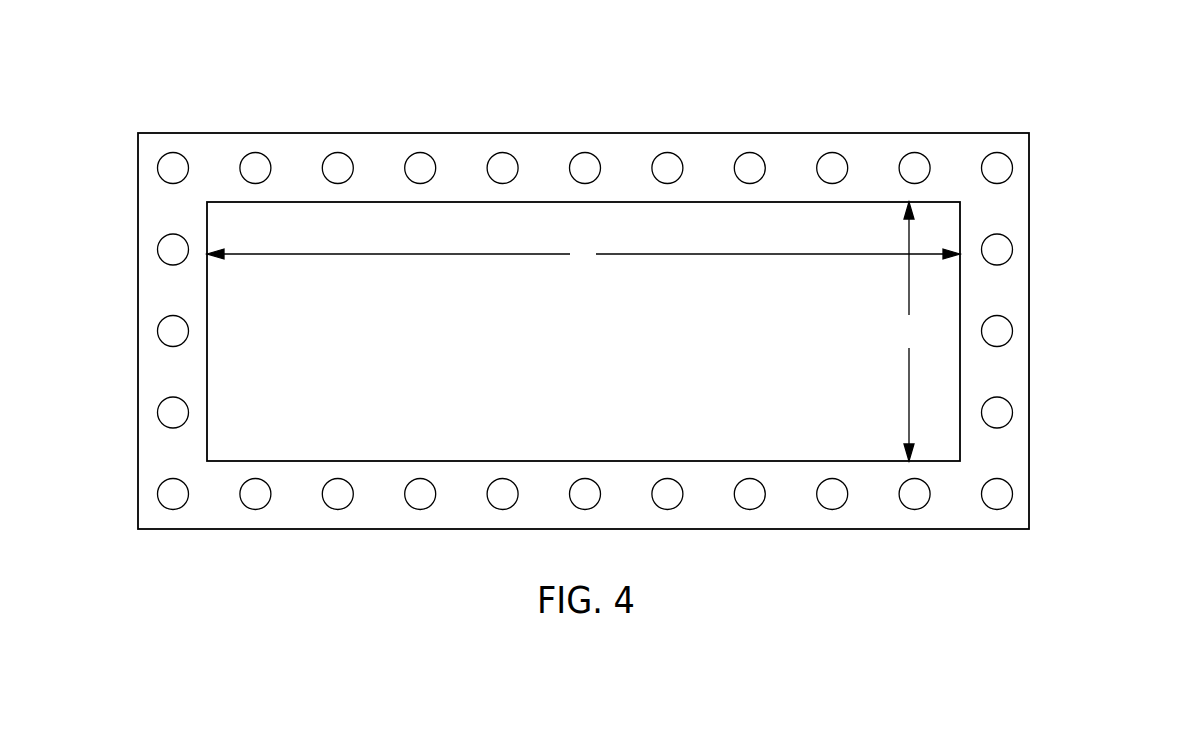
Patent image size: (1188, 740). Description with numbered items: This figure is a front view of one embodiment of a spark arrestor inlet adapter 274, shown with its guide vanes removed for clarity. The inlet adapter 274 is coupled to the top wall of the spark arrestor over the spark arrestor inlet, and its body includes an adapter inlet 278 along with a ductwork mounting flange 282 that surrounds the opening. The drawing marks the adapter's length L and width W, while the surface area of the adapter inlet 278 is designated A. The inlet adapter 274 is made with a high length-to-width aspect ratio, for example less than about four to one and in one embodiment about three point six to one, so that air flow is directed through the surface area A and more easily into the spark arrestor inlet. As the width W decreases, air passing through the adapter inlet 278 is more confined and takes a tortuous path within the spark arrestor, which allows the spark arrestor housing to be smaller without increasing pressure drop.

The inlet adapter 274 is at (1002, 128).
The adapter inlet 278 is at (282, 387).
The ductwork mounting flange 282 is at (940, 527).